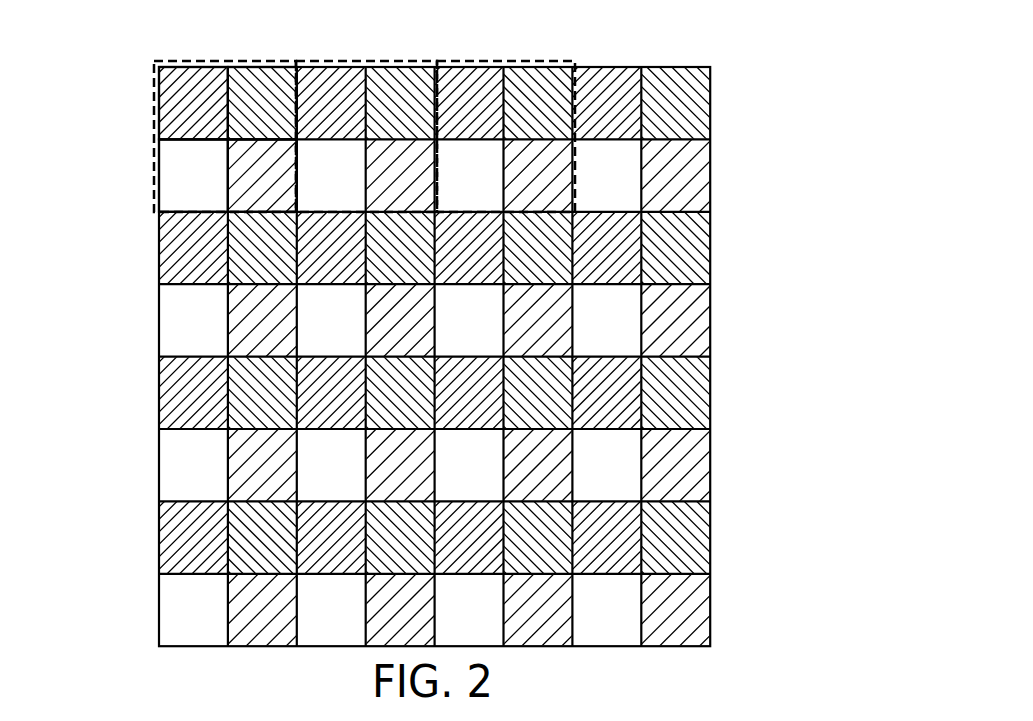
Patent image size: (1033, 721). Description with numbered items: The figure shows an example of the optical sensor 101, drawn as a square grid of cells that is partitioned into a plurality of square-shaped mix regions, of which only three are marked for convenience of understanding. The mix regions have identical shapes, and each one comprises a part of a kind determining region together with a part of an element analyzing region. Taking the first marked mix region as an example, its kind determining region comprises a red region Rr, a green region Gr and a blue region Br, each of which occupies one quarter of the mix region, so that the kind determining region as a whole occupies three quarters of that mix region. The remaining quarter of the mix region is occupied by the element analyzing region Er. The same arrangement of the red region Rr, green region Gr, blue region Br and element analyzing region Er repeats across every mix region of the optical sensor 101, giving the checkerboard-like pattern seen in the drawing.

The optical sensor 101 is at (752, 85).
The green region Gr is at (253, 87).
The red region Rr is at (182, 120).
The blue region Br is at (255, 158).
The element analyzing region Er is at (183, 193).